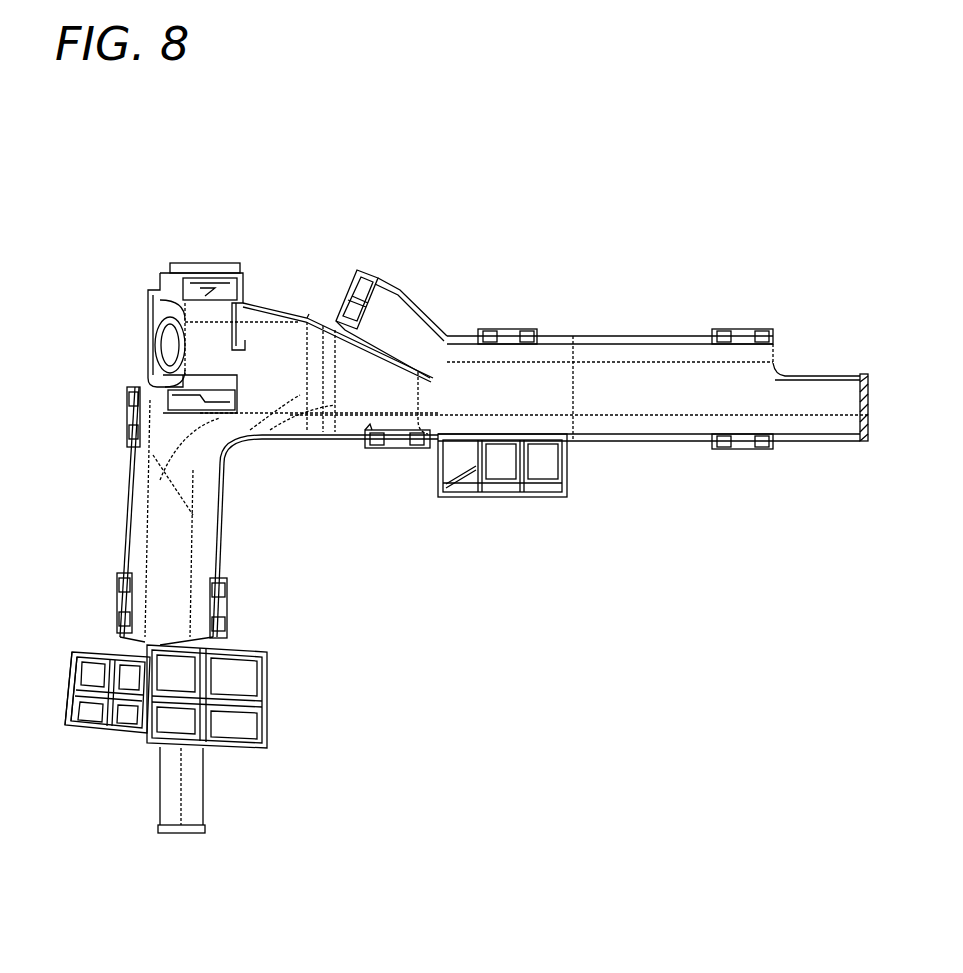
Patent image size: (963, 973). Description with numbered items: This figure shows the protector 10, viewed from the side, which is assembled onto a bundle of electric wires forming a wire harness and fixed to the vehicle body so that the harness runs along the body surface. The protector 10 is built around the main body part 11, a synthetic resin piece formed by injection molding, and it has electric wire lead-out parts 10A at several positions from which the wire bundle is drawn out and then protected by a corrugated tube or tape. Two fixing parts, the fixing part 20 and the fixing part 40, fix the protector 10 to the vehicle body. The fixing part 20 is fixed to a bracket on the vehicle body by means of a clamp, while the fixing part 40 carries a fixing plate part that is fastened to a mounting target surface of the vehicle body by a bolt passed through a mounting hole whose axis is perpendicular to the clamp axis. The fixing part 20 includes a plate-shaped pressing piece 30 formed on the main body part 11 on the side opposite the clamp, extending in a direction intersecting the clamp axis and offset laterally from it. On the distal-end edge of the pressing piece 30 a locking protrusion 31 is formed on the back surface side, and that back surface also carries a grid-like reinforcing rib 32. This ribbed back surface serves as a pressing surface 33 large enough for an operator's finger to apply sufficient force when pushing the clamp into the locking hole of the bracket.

The protector 10 is at (321, 238).
The electric wire lead-out part 10A is at (163, 338).
The main body part 11 is at (610, 349).
The fixing part 20 is at (245, 645).
The pressing piece 30 is at (88, 733).
The locking protrusion 31 is at (63, 700).
The reinforcing rib 32 is at (108, 656).
The pressing surface 33 is at (125, 715).
The fixing part 40 is at (575, 487).